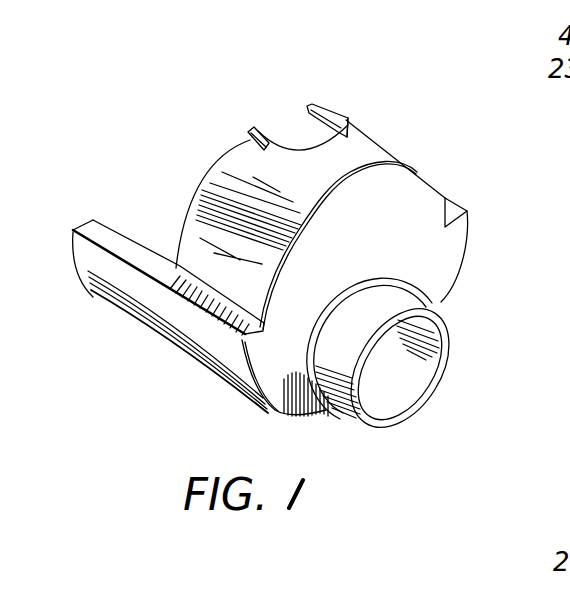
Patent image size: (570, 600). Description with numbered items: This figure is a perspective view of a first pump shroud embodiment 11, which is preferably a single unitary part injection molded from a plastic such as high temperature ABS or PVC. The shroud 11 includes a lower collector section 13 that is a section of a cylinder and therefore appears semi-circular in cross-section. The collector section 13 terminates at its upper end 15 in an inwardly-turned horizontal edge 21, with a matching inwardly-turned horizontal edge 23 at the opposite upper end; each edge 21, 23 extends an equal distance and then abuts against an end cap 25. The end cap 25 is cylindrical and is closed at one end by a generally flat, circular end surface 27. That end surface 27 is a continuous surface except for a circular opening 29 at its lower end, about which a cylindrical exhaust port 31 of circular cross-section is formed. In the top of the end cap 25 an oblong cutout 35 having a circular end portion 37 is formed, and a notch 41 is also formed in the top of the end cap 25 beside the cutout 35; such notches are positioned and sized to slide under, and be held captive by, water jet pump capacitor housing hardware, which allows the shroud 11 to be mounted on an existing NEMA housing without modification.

The pump shroud 11 is at (489, 226).
The lower collector section 13 is at (135, 295).
The upper end 15 is at (92, 250).
The inwardly-turned horizontal edge 21 is at (135, 256).
The inwardly-turned horizontal edge 23 is at (457, 200).
The end cap 25 is at (242, 170).
The end surface 27 is at (408, 190).
The circular opening 29 is at (426, 377).
The exhaust port 31 is at (405, 305).
The oblong cutout 35 is at (296, 127).
The circular end portion 37 is at (353, 127).
The notch 41 is at (258, 130).